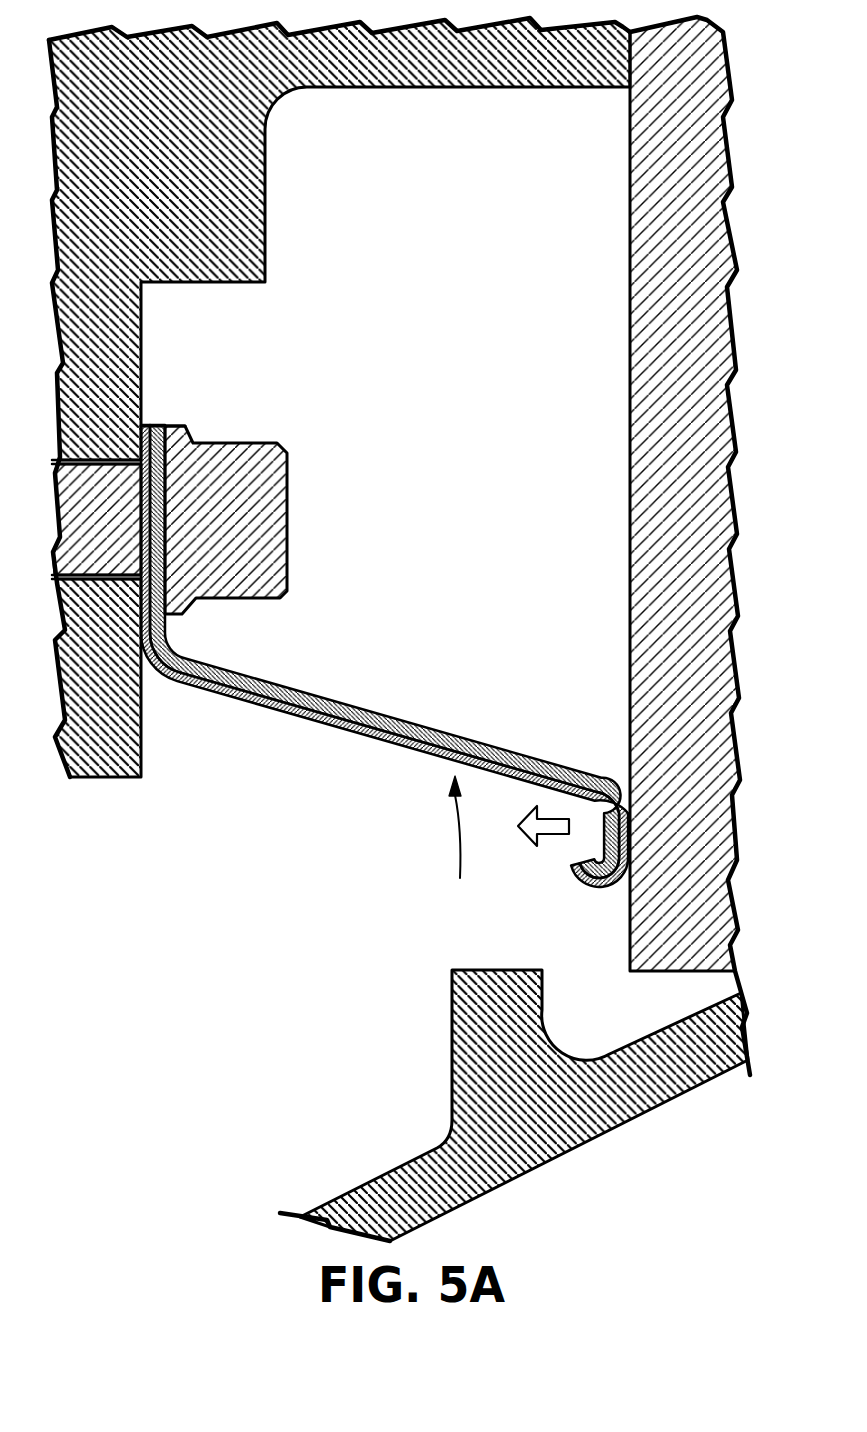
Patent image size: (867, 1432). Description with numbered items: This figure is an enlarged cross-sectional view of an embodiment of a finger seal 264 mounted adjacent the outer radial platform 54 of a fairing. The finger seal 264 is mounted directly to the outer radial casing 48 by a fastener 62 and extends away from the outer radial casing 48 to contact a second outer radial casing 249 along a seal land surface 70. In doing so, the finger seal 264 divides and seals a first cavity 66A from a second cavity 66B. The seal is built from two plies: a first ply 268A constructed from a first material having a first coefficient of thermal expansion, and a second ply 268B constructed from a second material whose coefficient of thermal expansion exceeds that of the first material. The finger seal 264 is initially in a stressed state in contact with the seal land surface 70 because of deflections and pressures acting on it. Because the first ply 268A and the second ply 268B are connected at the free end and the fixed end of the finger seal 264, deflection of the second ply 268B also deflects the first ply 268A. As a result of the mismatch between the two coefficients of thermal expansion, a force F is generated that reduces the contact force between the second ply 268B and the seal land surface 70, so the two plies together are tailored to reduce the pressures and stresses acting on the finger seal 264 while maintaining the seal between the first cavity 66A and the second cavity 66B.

The outer radial casing 48 is at (165, 207).
The outer wall 249 is at (703, 208).
The first cavity 66A is at (442, 292).
The second cavity 66B is at (368, 920).
The fastener 62 is at (267, 552).
The first ply 268A is at (330, 728).
The second ply 268B is at (389, 712).
The finger seal 264 is at (467, 842).
The force F is at (550, 838).
The seal land surface 70 is at (630, 913).
The outer radial platform 54 is at (523, 1137).